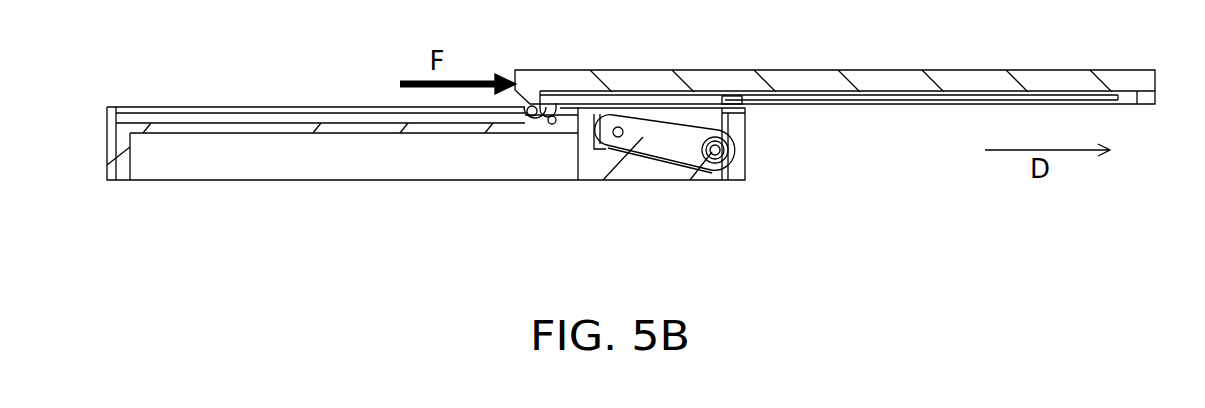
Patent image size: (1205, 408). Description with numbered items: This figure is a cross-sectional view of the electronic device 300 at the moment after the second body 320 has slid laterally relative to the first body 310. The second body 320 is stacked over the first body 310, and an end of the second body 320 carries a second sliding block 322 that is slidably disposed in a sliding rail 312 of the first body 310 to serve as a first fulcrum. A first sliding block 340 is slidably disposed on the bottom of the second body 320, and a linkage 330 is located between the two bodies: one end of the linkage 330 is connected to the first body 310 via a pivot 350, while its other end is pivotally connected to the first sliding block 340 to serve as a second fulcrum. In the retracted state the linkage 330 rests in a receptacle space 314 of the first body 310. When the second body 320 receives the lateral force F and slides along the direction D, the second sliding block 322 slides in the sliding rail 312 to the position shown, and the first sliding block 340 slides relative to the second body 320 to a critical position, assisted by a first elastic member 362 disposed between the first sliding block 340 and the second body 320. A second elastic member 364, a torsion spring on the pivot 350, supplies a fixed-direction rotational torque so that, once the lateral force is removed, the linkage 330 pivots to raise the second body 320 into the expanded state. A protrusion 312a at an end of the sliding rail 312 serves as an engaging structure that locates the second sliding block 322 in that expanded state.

The electronic device 300 is at (1027, 278).
The first body 310 is at (335, 182).
The sliding rail 312 is at (217, 118).
The protrusion 312a is at (556, 104).
The receptacle space 314 is at (648, 150).
The second body 320 is at (902, 82).
The second sliding block 322 is at (537, 118).
The linkage 330 is at (678, 150).
The first sliding block 340 is at (668, 104).
The pivot 350 is at (730, 148).
The first elastic member 362 is at (732, 96).
The second elastic member 364 is at (702, 168).